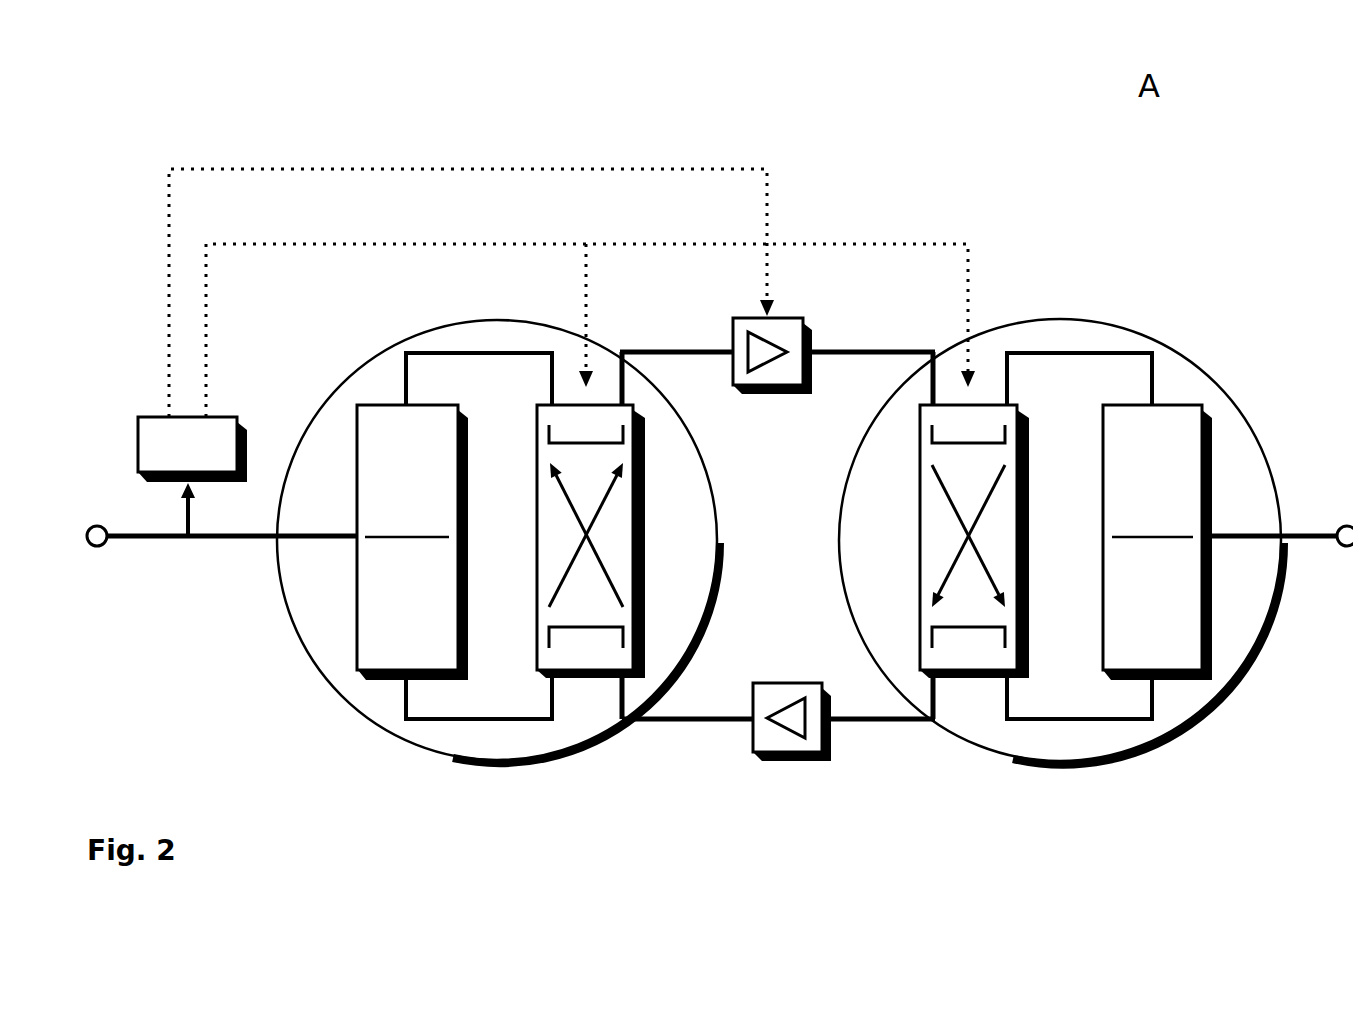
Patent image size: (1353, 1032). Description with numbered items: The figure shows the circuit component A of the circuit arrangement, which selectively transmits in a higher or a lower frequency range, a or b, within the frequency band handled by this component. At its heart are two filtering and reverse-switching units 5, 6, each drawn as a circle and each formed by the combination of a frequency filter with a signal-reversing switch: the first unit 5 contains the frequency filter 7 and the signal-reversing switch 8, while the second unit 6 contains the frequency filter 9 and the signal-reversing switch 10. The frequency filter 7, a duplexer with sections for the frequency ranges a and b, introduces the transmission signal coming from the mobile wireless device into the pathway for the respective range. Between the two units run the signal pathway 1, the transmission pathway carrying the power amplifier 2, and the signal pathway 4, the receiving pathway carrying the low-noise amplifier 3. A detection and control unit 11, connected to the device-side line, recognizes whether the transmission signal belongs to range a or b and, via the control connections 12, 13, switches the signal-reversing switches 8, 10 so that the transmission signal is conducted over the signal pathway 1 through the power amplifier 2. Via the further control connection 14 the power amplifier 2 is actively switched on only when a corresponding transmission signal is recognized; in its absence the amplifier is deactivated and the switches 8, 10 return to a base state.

The signal pathway 1 is at (712, 350).
The power amplifier 2 is at (813, 330).
The low-noise amplifier 3 is at (860, 722).
The signal pathway 4 is at (752, 752).
The filtering and reverse-switching unit 5 is at (437, 743).
The filtering and reverse-switching unit 6 is at (1122, 752).
The frequency filter 7 is at (353, 602).
The signal-reversing switch 8 is at (587, 680).
The frequency filter 9 is at (1211, 613).
The signal-reversing switch 10 is at (974, 635).
The detection and control unit 11 is at (138, 438).
The control connection 12 is at (590, 322).
The control connection 13 is at (970, 318).
The control connection 14 is at (442, 168).